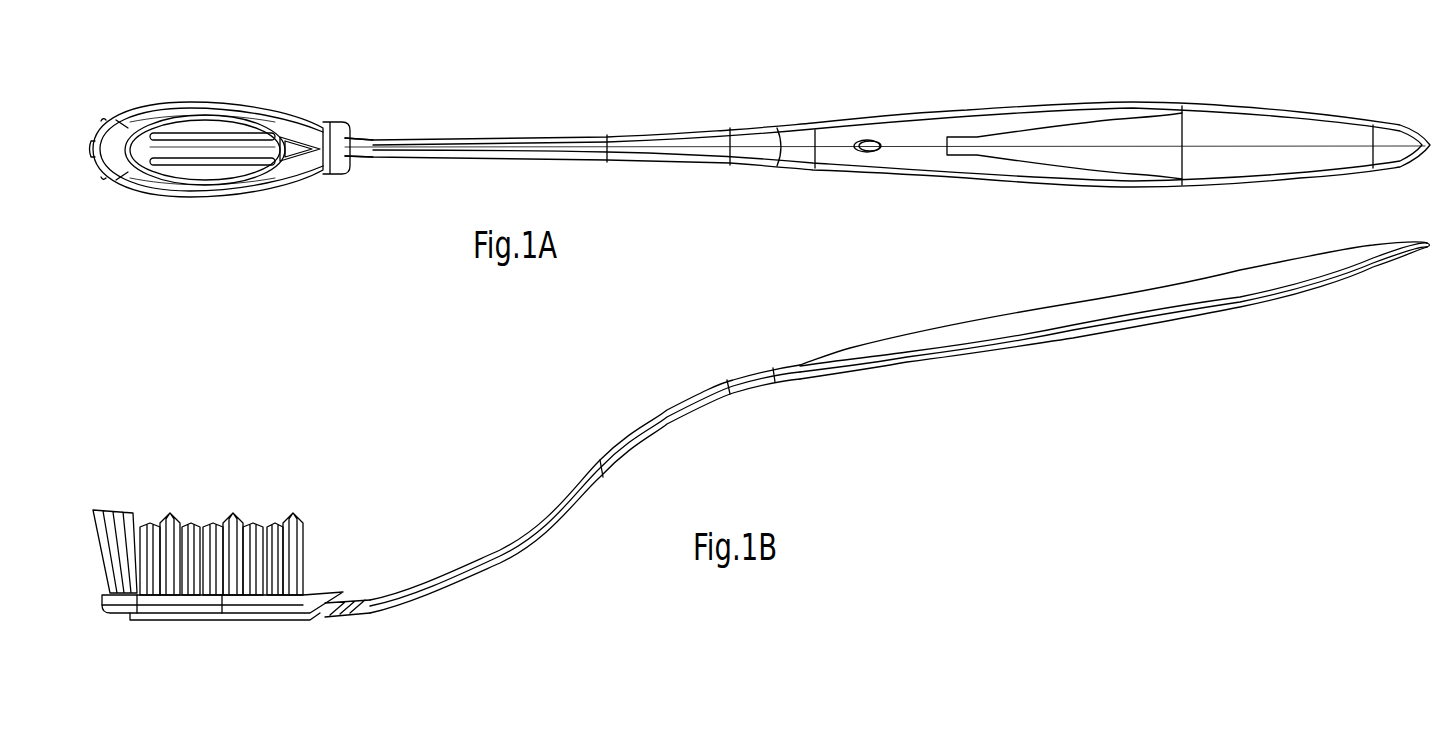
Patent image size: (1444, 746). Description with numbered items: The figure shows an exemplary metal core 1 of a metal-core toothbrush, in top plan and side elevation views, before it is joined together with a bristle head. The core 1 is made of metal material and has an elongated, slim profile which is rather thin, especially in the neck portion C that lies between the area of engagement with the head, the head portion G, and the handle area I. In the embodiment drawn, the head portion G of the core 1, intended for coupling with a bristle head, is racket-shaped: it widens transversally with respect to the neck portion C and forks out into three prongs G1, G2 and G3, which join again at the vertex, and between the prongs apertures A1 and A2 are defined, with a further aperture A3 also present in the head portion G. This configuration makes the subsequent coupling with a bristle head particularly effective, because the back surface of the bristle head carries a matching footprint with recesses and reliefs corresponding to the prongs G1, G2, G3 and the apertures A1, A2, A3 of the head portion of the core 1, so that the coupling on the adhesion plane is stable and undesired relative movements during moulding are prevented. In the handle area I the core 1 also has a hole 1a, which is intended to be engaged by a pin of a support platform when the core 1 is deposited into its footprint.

In FIG. 1A, the core 1 is at (1320, 125).
In FIG. 1B, the core 1 is at (1222, 292).
In FIG. 1A, the hole 1a is at (867, 140).
In FIG. 1A, the handle area I is at (1034, 82).
In FIG. 1B, the handle area I is at (992, 384).
In FIG. 1A, the neck portion C is at (727, 123).
In FIG. 1B, the neck portion C is at (647, 402).
In FIG. 1A, the head portion G is at (160, 104).
In FIG. 1B, the head portion G is at (268, 628).
In FIG. 1A, the aperture A1 is at (205, 133).
In FIG. 1A, the aperture A2 is at (210, 163).
In FIG. 1A, the aperture A3 is at (300, 149).
In FIG. 1A, the prong G1 is at (243, 122).
In FIG. 1A, the prong G2 is at (183, 148).
In FIG. 1A, the prong G3 is at (233, 180).